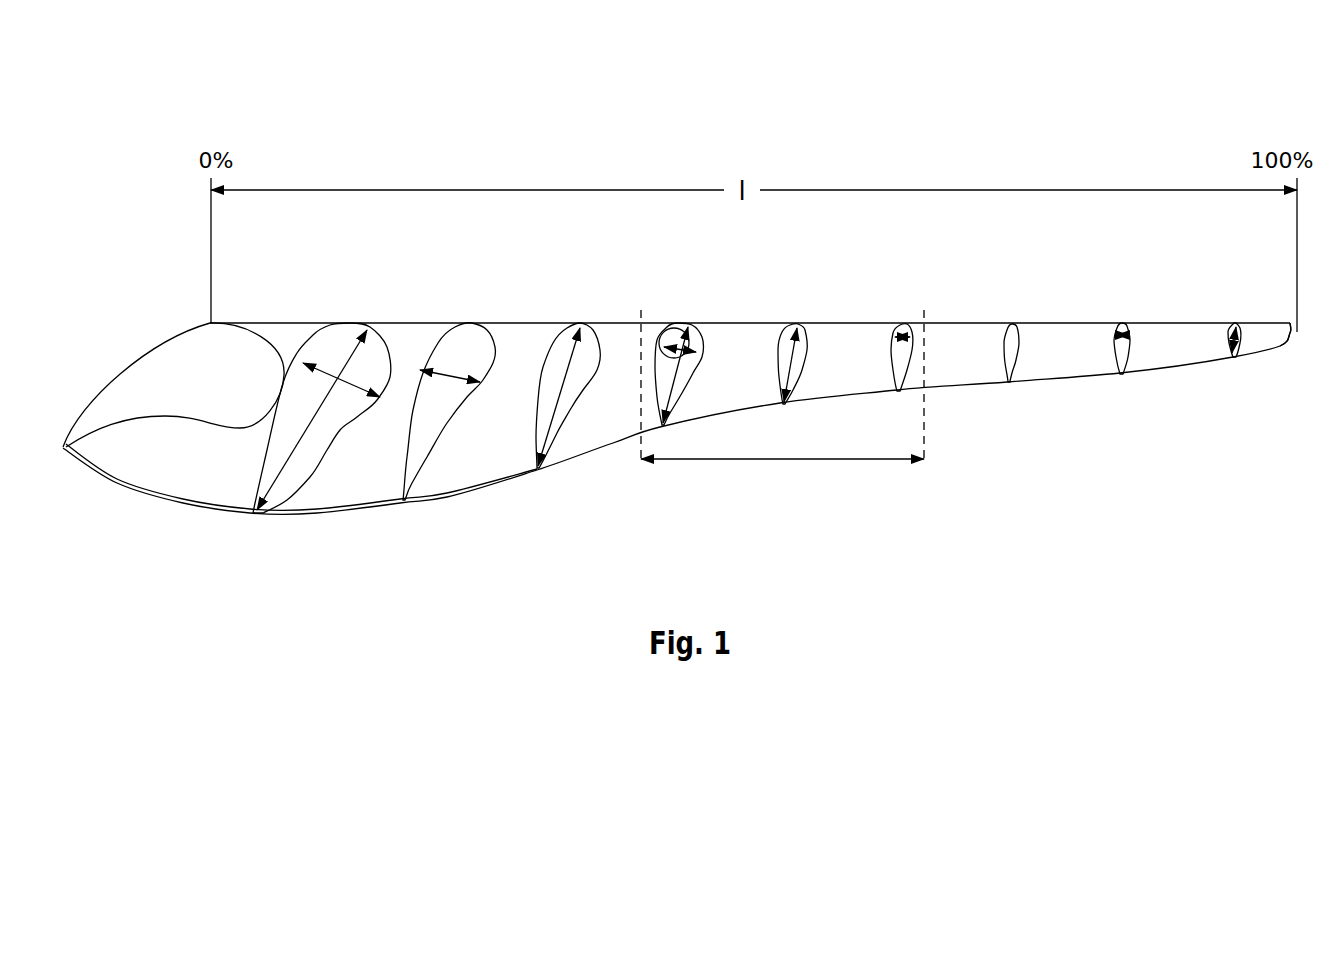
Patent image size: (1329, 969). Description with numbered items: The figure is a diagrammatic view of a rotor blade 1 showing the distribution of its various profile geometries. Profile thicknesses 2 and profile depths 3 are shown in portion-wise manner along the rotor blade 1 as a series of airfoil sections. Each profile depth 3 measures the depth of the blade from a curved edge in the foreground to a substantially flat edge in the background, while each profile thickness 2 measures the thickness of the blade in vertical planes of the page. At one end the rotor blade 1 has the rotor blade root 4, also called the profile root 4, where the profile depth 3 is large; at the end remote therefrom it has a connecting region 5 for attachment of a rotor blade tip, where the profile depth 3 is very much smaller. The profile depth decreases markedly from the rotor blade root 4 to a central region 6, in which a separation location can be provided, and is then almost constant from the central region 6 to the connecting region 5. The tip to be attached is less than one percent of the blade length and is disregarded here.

The rotor blade 1 is at (875, 136).
The profile thickness 2 is at (340, 408).
The profile depth 3 is at (350, 358).
The rotor blade root 4 is at (161, 387).
The connecting region 5 is at (1294, 331).
The central region 6 is at (792, 460).